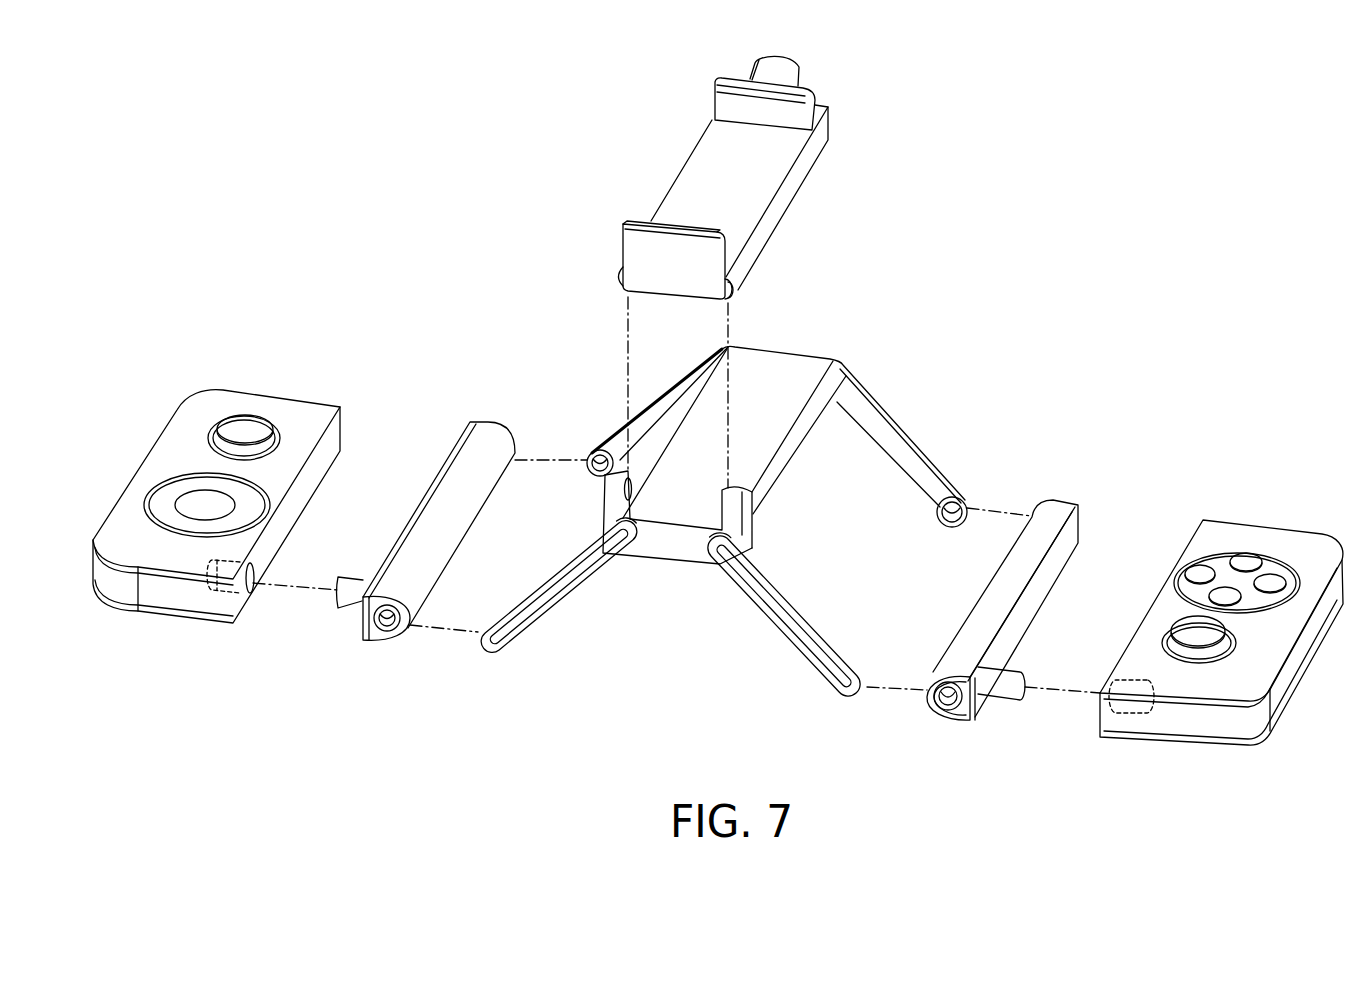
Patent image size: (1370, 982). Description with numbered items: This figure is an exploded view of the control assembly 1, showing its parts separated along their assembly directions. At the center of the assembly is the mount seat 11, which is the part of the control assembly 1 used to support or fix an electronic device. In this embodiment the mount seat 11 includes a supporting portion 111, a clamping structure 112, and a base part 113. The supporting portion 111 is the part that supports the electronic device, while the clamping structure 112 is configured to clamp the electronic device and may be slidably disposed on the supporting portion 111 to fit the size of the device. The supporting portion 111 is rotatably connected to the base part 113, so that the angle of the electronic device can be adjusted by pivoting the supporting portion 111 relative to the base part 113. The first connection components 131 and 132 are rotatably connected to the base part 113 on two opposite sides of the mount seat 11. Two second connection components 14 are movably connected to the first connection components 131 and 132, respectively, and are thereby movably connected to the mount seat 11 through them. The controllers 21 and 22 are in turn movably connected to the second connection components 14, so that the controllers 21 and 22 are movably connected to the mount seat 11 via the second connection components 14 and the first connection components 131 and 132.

The control assembly 1 is at (394, 101).
The mount seat 11 is at (910, 33).
The supporting portion 111 is at (814, 194).
The clamping structure 112 is at (794, 71).
The base part 113 is at (787, 373).
The first connection component 131 is at (575, 619).
The first connection component 132 is at (765, 638).
The second connection component 14 is at (501, 409).
The controller 21 is at (292, 382).
The controller 22 is at (1271, 515).